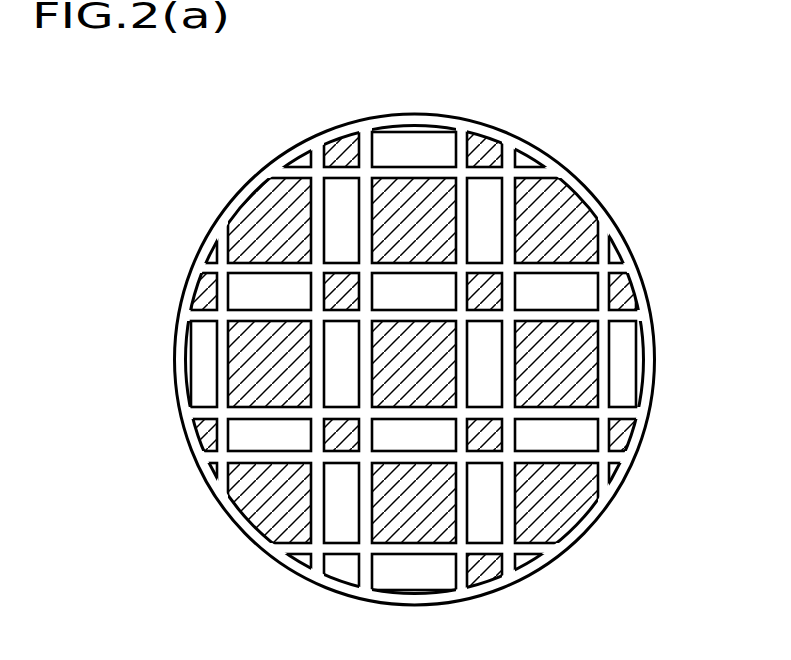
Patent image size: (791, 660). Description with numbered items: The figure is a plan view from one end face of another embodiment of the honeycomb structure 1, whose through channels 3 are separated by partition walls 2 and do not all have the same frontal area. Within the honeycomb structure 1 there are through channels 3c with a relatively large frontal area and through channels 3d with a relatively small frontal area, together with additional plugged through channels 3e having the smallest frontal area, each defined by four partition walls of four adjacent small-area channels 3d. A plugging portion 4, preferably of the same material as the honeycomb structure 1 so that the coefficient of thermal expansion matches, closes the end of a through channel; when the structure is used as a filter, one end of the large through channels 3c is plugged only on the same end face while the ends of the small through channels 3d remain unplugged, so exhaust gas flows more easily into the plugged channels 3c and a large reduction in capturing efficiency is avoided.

The honeycomb structure 1 is at (390, 352).
The partition wall 2 is at (483, 265).
The through channels 3 is at (102, 378).
The through channels with a relatively large frontal area 3c is at (278, 190).
The through channels with a relatively small frontal area 3d is at (392, 293).
The plugged through channels having the smallest frontal area 3e is at (335, 305).
The plugging portion 4 is at (395, 203).